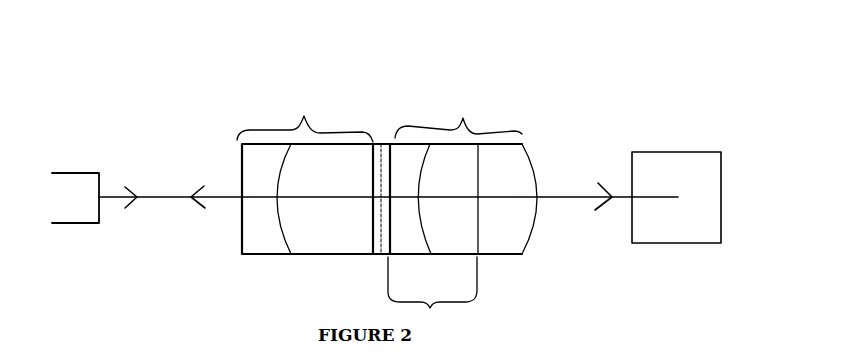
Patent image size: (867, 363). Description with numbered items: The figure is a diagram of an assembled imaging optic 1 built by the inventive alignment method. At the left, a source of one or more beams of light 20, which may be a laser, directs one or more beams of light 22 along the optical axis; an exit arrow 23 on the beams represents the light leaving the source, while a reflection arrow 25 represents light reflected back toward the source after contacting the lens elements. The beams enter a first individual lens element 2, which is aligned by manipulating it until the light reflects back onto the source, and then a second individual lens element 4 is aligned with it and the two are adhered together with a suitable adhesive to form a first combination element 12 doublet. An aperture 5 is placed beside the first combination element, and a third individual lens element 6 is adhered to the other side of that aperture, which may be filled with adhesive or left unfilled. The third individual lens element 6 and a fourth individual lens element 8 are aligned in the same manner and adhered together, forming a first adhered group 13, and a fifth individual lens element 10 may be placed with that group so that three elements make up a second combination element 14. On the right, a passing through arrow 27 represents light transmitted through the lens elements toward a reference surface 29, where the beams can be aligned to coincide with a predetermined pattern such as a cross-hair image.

The imaging optic 1 is at (215, 93).
The first individual lens element 2 is at (245, 252).
The second individual lens element 4 is at (317, 250).
The aperture 5 is at (382, 145).
The third individual lens element 6 is at (406, 250).
The fourth individual lens element 8 is at (459, 248).
The fifth individual lens element 10 is at (514, 245).
The first combination element 12 is at (305, 114).
The first adhered group 13 is at (432, 292).
The second combination element 14 is at (458, 114).
The source of one or more beams of light 20 is at (61, 217).
The one or more beams of light 22 is at (157, 200).
The exit arrow 23 is at (128, 190).
The reflection arrow 25 is at (202, 187).
The passing through arrow 27 is at (602, 185).
The reference surface 29 is at (722, 225).